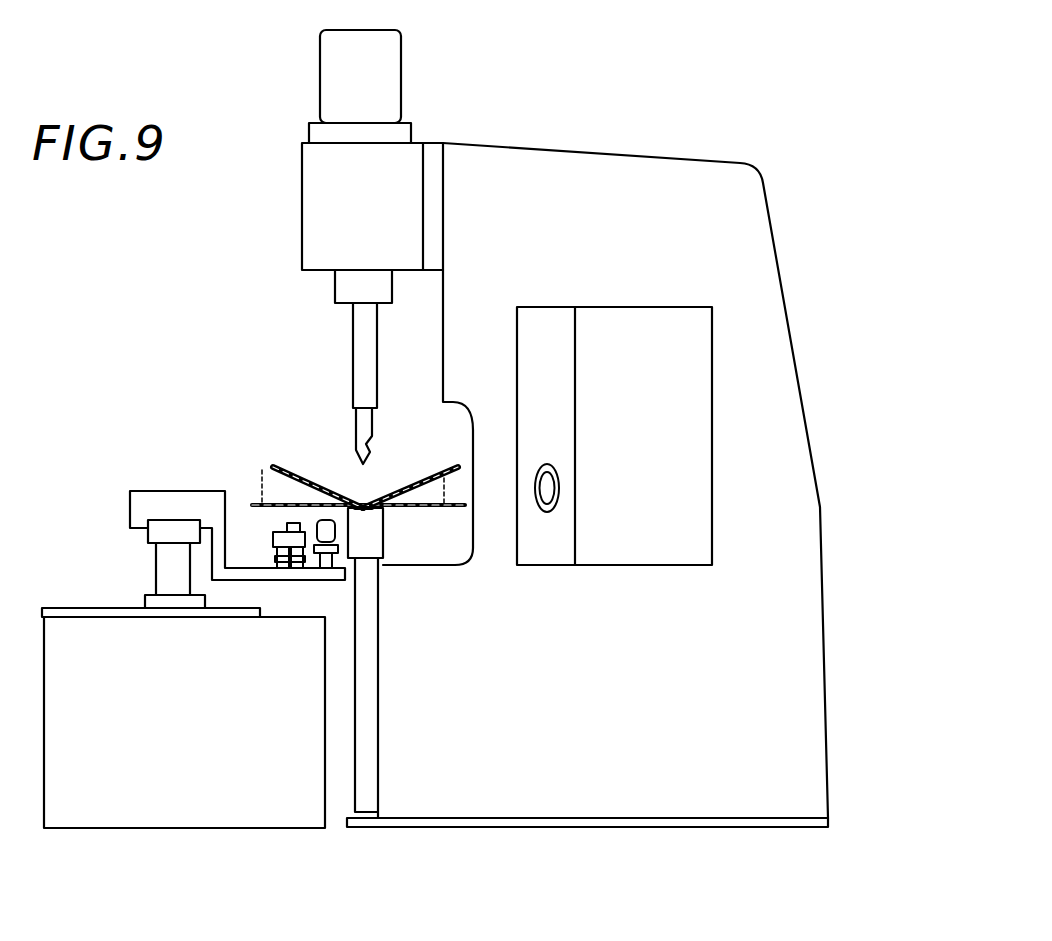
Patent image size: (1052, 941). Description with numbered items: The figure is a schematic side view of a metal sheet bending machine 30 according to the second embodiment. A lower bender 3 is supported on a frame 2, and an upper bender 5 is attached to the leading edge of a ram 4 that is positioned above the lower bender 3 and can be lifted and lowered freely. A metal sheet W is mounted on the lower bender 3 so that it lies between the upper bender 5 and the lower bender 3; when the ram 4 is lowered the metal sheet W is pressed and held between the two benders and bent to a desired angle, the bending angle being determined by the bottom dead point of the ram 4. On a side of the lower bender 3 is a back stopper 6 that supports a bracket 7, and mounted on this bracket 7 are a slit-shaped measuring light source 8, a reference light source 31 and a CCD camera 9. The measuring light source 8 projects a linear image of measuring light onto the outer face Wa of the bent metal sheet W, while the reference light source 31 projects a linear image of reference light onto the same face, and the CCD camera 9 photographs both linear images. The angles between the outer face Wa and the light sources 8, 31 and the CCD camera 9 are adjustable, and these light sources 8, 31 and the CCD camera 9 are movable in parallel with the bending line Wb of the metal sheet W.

The metal sheet bending machine 30 is at (583, 126).
The ram 4 is at (355, 342).
The upper bender 5 is at (358, 418).
The lower bender 3 is at (383, 548).
The frame 2 is at (365, 650).
The metal sheet W is at (273, 466).
The outer face of the bent metal sheet Wa is at (441, 474).
The bending line Wb is at (383, 510).
The bracket 7 is at (138, 502).
The back stopper 6 is at (162, 567).
The reference light source 31 is at (283, 524).
The CCD camera 9 is at (275, 540).
The measuring light source 8 is at (313, 550).